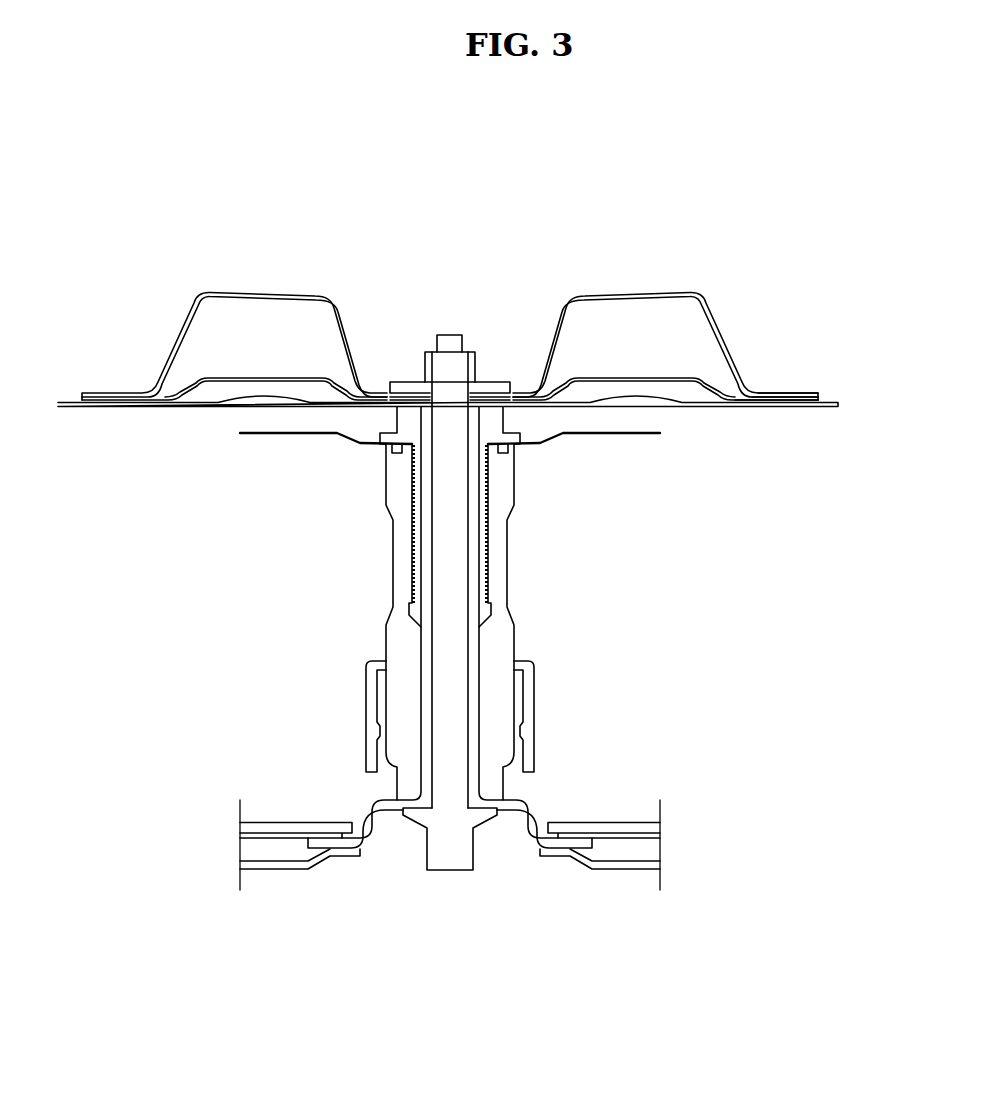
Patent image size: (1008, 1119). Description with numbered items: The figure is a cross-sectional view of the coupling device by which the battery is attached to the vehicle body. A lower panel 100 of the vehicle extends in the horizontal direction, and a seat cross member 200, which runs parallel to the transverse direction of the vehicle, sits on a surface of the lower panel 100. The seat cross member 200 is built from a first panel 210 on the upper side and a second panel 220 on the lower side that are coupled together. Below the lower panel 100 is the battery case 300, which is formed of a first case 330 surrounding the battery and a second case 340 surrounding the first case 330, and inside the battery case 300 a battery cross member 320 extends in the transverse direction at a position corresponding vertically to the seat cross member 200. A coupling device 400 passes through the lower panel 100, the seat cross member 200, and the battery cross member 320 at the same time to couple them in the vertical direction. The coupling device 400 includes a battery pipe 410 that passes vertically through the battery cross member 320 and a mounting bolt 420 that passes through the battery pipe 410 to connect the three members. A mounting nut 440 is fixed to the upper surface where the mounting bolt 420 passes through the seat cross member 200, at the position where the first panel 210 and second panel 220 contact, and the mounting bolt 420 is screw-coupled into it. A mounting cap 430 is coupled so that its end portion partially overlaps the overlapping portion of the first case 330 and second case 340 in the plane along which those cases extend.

The lower panel 100 is at (828, 408).
The seat cross member 200 is at (712, 289).
The first panel 210 is at (640, 293).
The second panel 220 is at (718, 402).
The battery case 300 is at (506, 820).
The battery cross member 320 is at (531, 707).
The first case 330 is at (650, 828).
The second case 340 is at (624, 878).
The coupling device 400 is at (450, 648).
The battery pipe 410 is at (506, 637).
The mounting bolt 420 is at (452, 862).
The mounting cap 430 is at (528, 838).
The mounting nut 440 is at (490, 386).